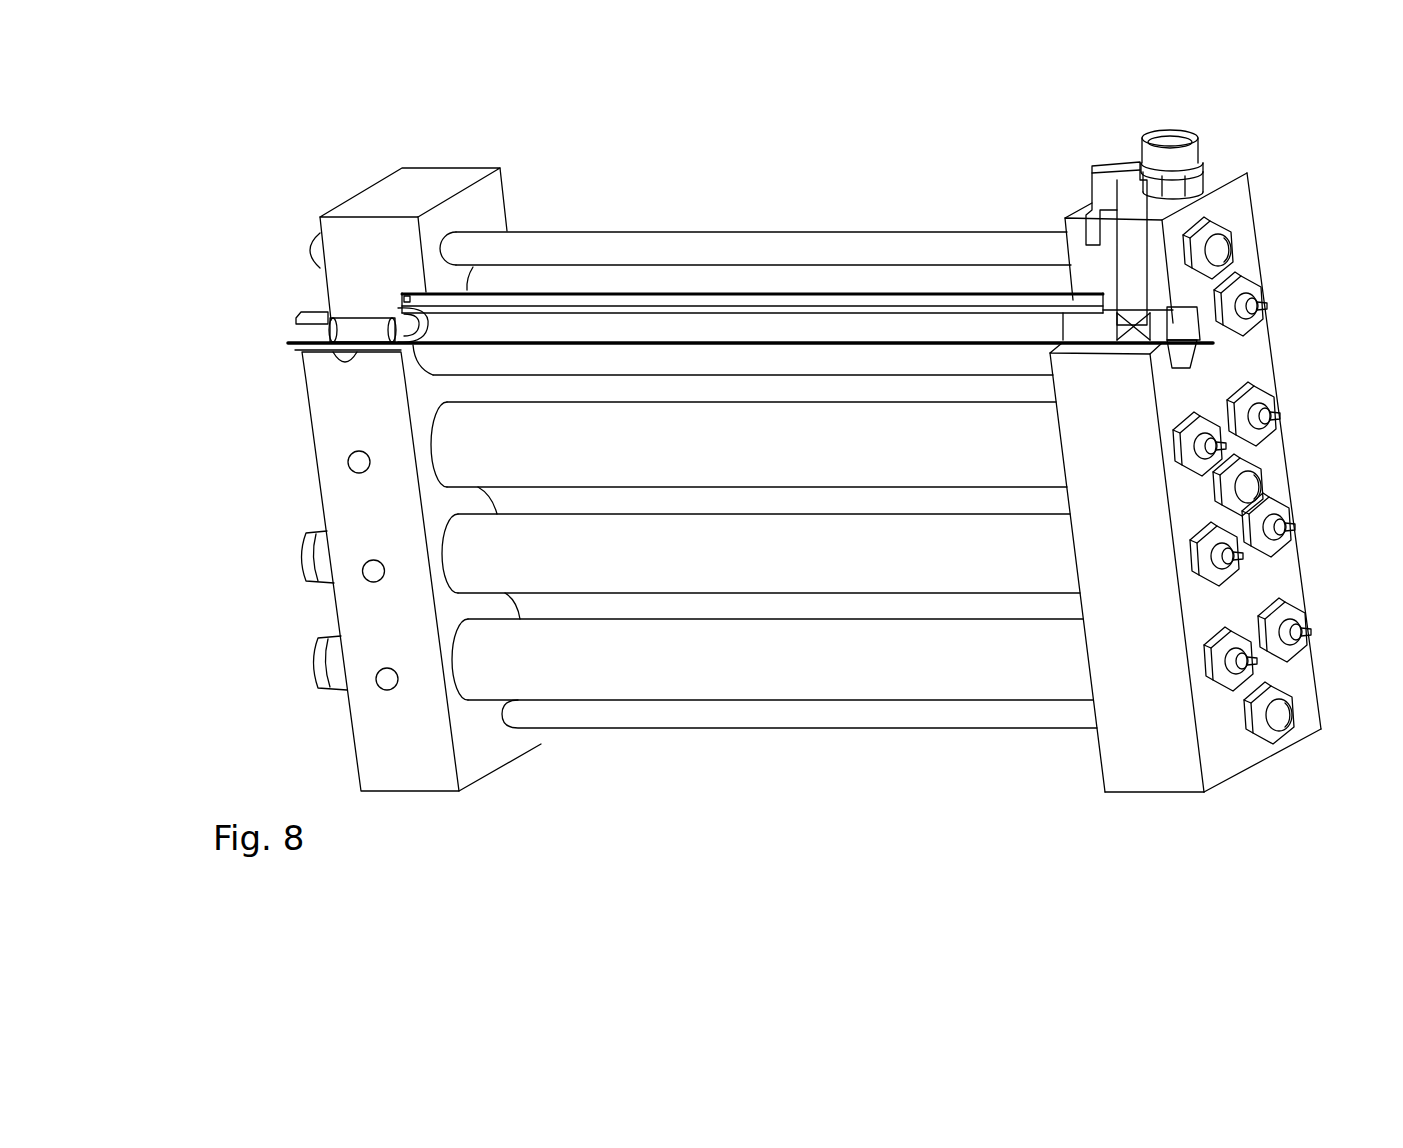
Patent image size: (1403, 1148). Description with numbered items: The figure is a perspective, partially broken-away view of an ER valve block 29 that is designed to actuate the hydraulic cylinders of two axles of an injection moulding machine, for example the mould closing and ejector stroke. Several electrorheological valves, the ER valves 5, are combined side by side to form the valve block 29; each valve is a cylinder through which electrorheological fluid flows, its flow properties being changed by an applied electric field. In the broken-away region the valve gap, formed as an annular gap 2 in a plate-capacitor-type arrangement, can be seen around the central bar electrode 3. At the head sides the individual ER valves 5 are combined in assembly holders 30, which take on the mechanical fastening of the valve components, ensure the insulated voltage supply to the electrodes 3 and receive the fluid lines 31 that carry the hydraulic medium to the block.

The annular gap 2 is at (570, 297).
The bar electrode 3 is at (645, 325).
The ER valve 5 is at (740, 270).
The valve block 29 is at (755, 486).
The assembly holder 30 is at (335, 512).
The fluid line 31 is at (1193, 145).